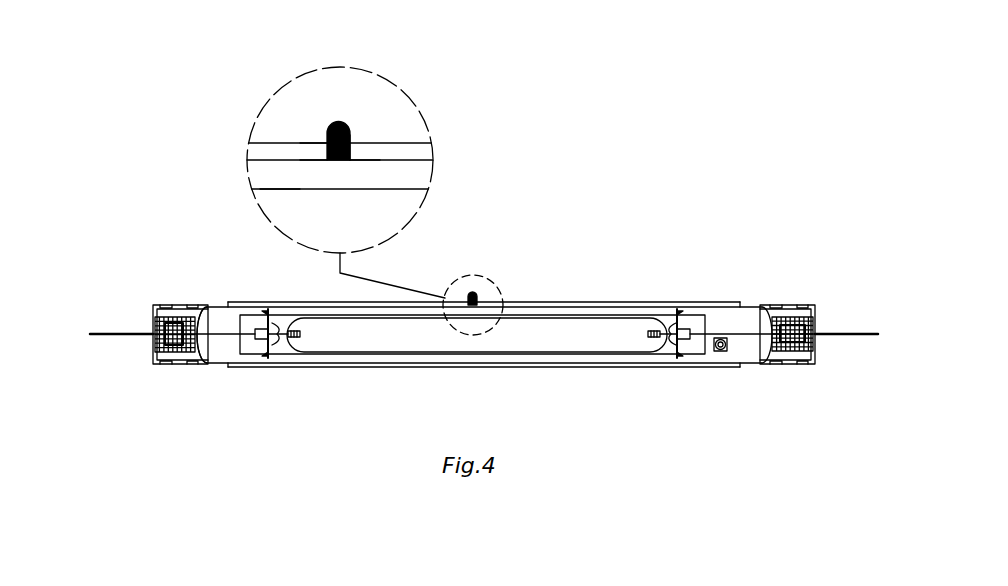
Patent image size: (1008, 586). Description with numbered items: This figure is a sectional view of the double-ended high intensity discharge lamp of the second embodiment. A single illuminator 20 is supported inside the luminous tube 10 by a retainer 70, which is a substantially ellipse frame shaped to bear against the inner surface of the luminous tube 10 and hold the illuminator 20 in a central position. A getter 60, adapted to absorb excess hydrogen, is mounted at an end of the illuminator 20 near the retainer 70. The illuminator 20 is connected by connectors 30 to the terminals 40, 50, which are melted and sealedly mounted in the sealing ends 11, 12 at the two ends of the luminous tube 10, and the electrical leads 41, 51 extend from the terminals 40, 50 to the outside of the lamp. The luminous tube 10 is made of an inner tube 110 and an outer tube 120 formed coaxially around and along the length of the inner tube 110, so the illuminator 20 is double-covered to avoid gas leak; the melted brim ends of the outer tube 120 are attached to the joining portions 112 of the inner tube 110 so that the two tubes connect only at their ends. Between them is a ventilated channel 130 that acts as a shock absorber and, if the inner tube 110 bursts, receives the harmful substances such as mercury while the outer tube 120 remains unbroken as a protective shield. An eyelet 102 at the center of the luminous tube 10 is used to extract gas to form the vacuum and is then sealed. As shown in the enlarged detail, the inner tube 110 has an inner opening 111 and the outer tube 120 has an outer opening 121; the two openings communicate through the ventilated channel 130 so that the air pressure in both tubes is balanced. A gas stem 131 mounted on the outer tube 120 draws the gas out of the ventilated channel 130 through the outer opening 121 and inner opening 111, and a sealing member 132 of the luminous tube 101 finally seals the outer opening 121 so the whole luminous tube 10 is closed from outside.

The luminous tube 10 is at (626, 251).
The sealing end 11 is at (863, 398).
The sealing end 12 is at (156, 398).
The illuminator 20 is at (341, 398).
The connector 30 is at (218, 398).
The terminal 40 is at (858, 271).
The electrical lead 41 is at (895, 316).
The terminal 50 is at (150, 271).
The electrical lead 51 is at (71, 316).
The getter 60 is at (771, 398).
The retainer 70 is at (780, 251).
The luminous tube 101 is at (210, 251).
The eyelet 102 is at (482, 251).
The inner tube 110 is at (574, 251).
The inner opening 111 is at (494, 210).
The joining portion 112 is at (840, 251).
The outer tube 120 is at (680, 251).
The outer opening 121 is at (285, 41).
The ventilated channel 130 is at (210, 161).
The gas stem 131 is at (474, 66).
The sealing member 132 is at (230, 216).